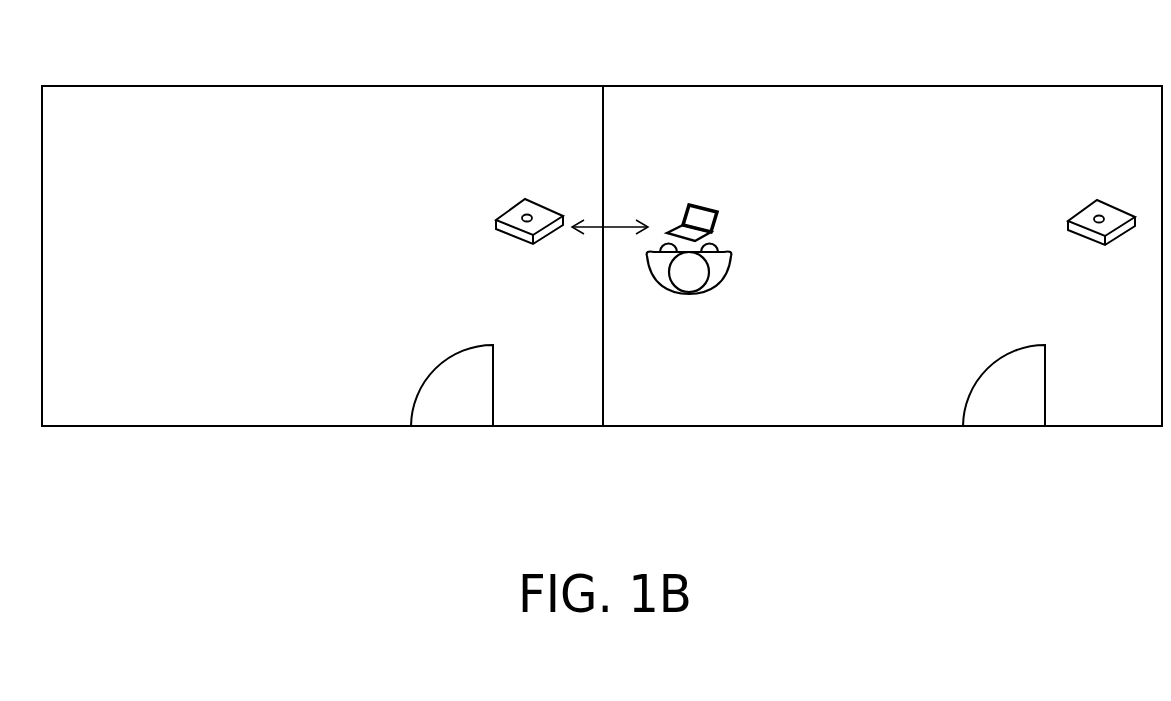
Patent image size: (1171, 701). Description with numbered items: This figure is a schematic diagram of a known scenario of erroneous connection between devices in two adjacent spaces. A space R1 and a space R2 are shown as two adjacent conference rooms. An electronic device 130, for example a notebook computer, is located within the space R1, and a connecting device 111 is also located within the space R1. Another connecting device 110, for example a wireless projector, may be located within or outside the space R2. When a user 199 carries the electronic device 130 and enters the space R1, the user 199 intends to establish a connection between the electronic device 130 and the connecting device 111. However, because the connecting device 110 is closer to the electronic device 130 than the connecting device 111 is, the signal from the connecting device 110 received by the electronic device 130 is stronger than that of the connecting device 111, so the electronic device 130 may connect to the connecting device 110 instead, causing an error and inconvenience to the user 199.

The space R1 is at (1091, 128).
The space R2 is at (154, 128).
The connecting device 110 is at (516, 236).
The connecting device 111 is at (1088, 237).
The electronic device 130 is at (718, 213).
The user 199 is at (718, 274).